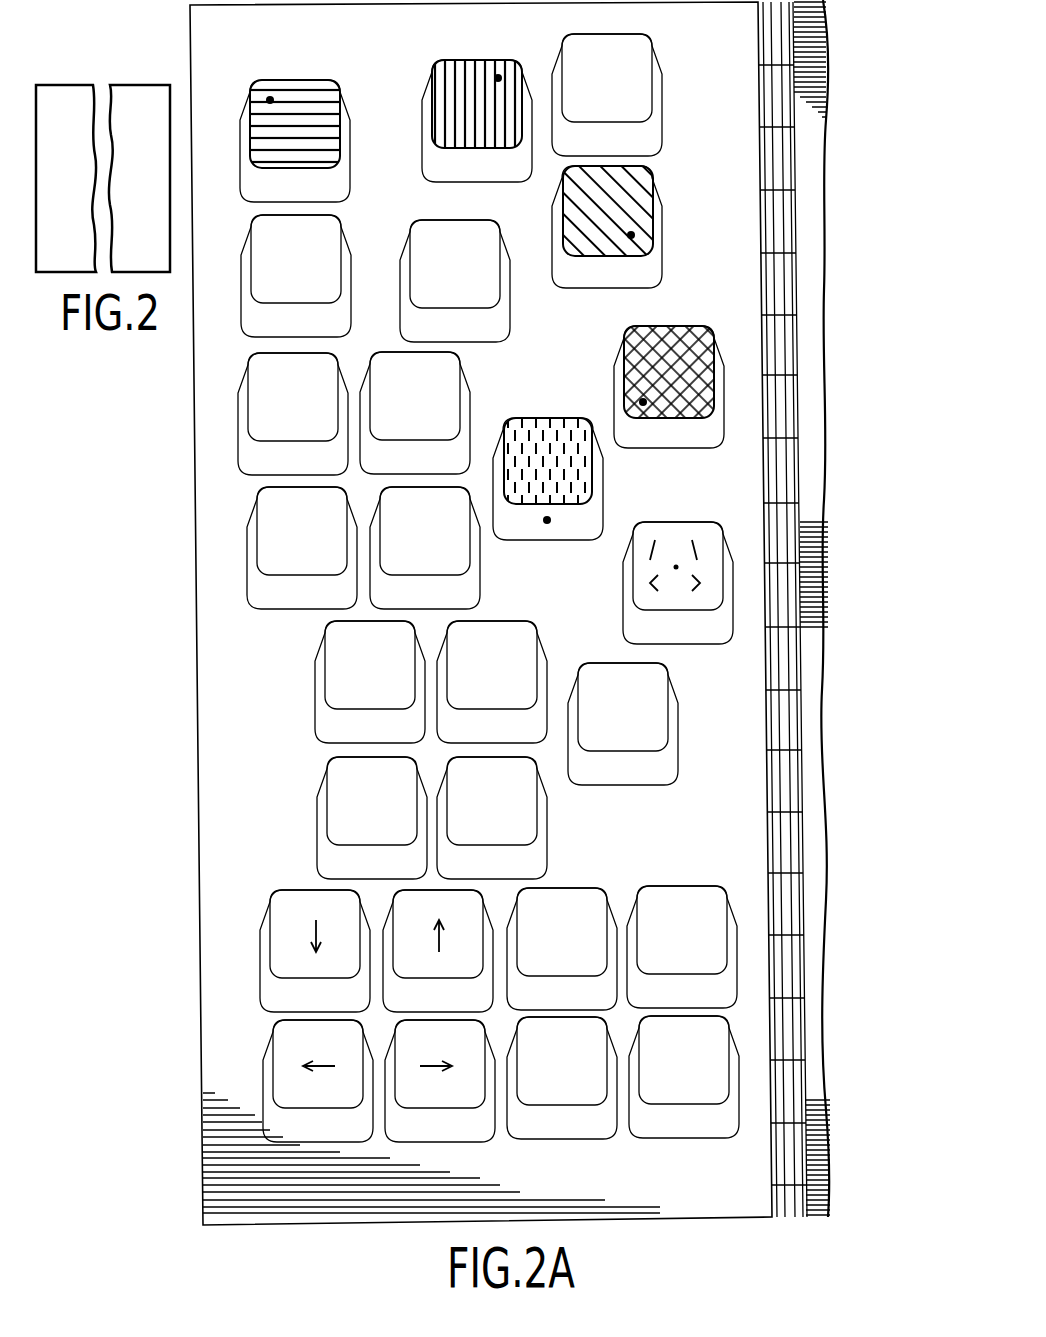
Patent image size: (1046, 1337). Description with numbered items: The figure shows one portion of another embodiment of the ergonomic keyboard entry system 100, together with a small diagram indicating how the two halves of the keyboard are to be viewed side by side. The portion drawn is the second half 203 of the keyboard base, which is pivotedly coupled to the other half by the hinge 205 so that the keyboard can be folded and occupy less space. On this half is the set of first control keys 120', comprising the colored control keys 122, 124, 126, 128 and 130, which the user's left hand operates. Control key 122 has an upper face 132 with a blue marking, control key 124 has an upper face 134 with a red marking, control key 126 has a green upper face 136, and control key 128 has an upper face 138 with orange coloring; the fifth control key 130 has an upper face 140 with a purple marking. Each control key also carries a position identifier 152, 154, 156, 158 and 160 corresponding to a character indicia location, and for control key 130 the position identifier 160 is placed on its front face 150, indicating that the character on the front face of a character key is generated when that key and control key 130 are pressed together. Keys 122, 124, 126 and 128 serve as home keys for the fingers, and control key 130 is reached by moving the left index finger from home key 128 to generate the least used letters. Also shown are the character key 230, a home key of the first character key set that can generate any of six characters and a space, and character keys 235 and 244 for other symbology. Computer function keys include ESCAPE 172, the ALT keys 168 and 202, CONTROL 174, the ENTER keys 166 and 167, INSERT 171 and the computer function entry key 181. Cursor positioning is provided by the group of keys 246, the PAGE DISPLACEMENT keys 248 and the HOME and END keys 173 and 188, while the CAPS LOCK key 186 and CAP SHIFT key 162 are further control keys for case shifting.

In FIG. 2, the ergonomic keyboard entry system 100 is at (100, 58).
In FIG. 2A, the second half 203 is at (200, 362).
In FIG. 2A, the hinge 205 is at (800, 35).
In FIG. 2A, the set of first control keys 120' is at (442, 595).
In FIG. 2A, the control key 122 is at (272, 150).
In FIG. 2A, the upper face 132 is at (267, 113).
In FIG. 2A, the position identifier 152 is at (268, 98).
In FIG. 2A, the control key 124 is at (445, 98).
In FIG. 2A, the upper face 134 is at (444, 88).
In FIG. 2A, the position identifier 154 is at (500, 76).
In FIG. 2A, the ALT key 202 is at (657, 58).
In FIG. 2A, the control key 126 is at (615, 222).
In FIG. 2A, the upper face 136 is at (615, 224).
In FIG. 2A, the position identifier 156 is at (632, 236).
In FIG. 2A, the ESCAPE key 172 is at (348, 240).
In FIG. 2A, the ENTER key 167 is at (508, 318).
In FIG. 2A, the control key 128 is at (638, 368).
In FIG. 2A, the upper face 138 is at (633, 353).
In FIG. 2A, the position identifier 158 is at (640, 403).
In FIG. 2A, the HOME key 173 is at (238, 413).
In FIG. 2A, the INSERT key 171 is at (463, 373).
In FIG. 2A, the fifth control key 130 is at (576, 486).
In FIG. 2A, the upper face 140 is at (536, 430).
In FIG. 2A, the front face 150 is at (524, 532).
In FIG. 2A, the position identifier 160 is at (546, 522).
In FIG. 2A, the END key 188 is at (262, 604).
In FIG. 2A, the CAPS LOCK key 186 is at (478, 598).
In FIG. 2A, the ALT key 168 is at (540, 643).
In FIG. 2A, the character key 235 is at (690, 521).
In FIG. 2A, the CAP SHIFT key 162 is at (673, 684).
In FIG. 2A, the PAGE DISPLACEMENT keys 248 is at (323, 790).
In FIG. 2A, the CONTROL key 174 is at (548, 800).
In FIG. 2A, the character key 244 is at (580, 888).
In FIG. 2A, the character key 230 is at (683, 886).
In FIG. 2A, the group of keys 246 is at (263, 1088).
In FIG. 2A, the ENTER key 166 is at (563, 1139).
In FIG. 2A, the computer function entry key 181 is at (685, 1139).